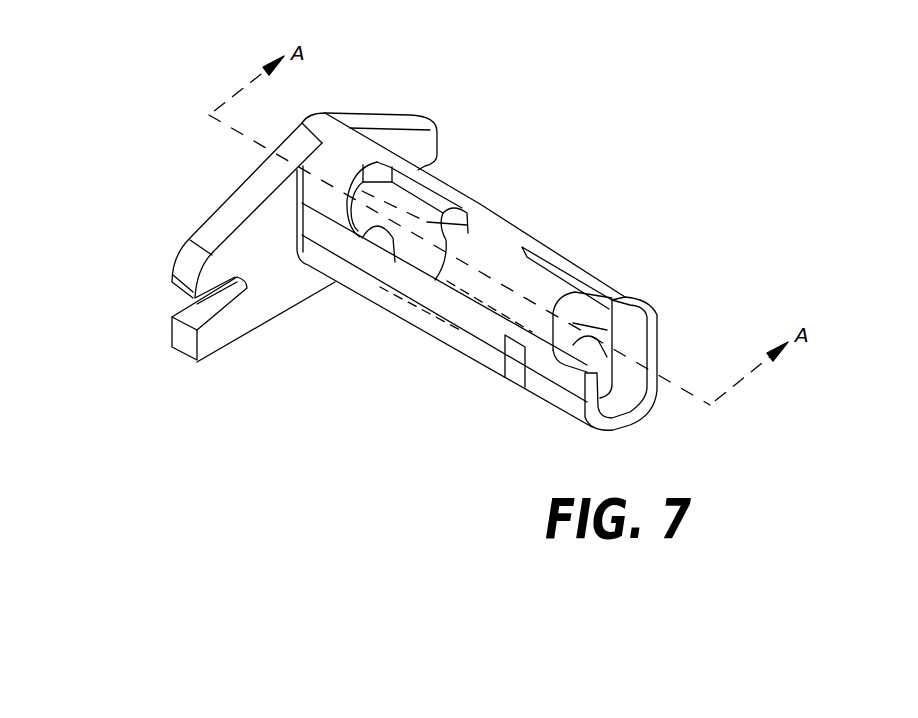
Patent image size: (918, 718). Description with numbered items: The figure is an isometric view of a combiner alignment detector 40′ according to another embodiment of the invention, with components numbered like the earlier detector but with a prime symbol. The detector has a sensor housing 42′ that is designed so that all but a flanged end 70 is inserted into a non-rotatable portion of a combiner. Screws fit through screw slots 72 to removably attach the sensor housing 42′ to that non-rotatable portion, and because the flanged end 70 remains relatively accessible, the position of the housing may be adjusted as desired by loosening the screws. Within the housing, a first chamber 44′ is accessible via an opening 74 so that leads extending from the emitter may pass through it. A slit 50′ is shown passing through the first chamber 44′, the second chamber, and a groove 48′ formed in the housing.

The combiner alignment detector 40′ is at (141, 53).
The sensor housing 42′ is at (577, 138).
The first chamber 44′ is at (478, 203).
The groove 48′ is at (512, 370).
The slit 50′ is at (577, 268).
The flanged end 70 is at (232, 207).
The screw slots 72 is at (427, 163).
The opening 74 is at (395, 262).